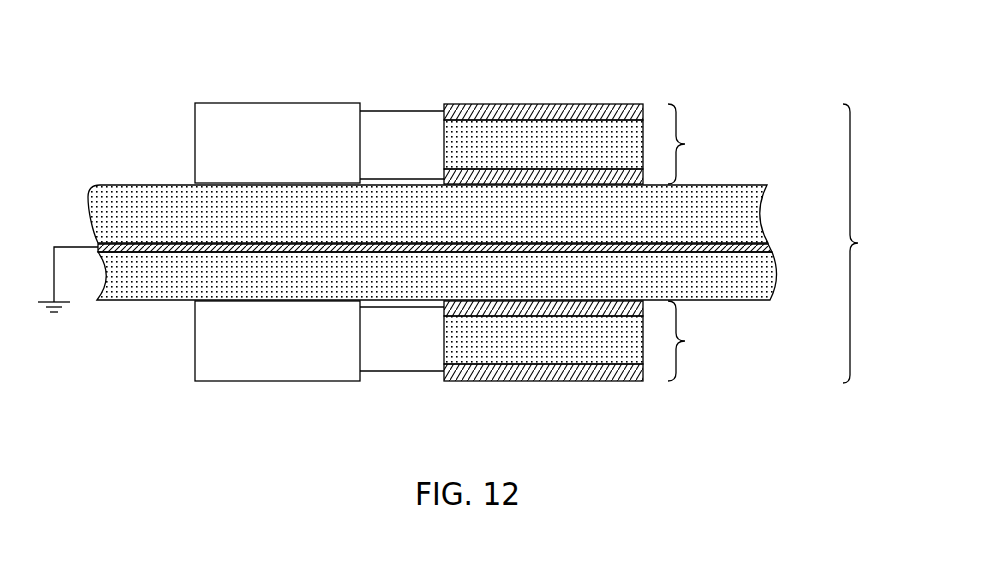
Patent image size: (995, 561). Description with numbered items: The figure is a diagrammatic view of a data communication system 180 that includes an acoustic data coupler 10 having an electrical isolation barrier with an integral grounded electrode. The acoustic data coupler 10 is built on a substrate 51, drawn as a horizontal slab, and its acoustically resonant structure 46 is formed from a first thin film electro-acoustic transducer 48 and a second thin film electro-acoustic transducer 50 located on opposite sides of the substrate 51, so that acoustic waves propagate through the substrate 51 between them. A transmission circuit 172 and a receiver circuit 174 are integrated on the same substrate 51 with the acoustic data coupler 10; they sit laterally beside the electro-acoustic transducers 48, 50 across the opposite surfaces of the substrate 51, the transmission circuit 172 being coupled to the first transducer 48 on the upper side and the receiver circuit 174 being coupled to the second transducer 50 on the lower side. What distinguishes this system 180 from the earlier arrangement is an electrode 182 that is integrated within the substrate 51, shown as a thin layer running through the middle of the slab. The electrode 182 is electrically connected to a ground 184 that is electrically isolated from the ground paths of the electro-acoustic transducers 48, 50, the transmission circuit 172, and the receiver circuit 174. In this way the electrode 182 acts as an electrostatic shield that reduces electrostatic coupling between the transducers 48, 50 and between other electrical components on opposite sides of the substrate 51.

The acoustic data coupler 10 is at (568, 77).
The acoustically resonant structure 46 is at (852, 168).
The first thin film electro-acoustic transducer 48 is at (677, 128).
The second thin film electro-acoustic transducer 50 is at (677, 363).
The substrate 51 is at (778, 263).
The transmission circuit 172 is at (278, 102).
The receiver circuit 174 is at (277, 381).
The data communication system 180 is at (737, 62).
The electrode 182 is at (533, 243).
The ground 184 is at (58, 313).